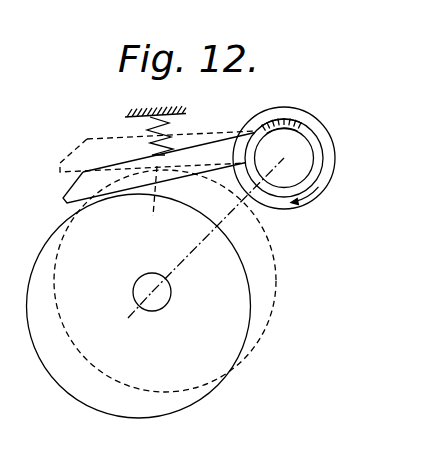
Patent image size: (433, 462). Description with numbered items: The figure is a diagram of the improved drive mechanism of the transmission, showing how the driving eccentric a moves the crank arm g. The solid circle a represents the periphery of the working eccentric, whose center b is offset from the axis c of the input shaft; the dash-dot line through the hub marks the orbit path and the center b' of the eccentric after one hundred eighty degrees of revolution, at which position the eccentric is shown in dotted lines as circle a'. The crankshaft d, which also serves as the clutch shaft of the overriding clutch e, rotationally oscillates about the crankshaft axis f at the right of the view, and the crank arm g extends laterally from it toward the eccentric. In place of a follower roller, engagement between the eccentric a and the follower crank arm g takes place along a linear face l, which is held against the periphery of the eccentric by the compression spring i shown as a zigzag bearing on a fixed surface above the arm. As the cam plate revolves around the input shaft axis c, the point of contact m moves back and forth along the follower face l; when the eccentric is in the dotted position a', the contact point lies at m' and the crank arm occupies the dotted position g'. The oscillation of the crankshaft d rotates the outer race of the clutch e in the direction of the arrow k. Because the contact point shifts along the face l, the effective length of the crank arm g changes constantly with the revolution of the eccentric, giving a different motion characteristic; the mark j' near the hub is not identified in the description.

The driving eccentric a is at (128, 306).
The eccentric after 180 degrees of revolution a' is at (187, 281).
The center of the eccentric b is at (140, 318).
The center of the eccentric in displaced position b' is at (218, 225).
The axis of the input shaft c is at (157, 296).
The crankshaft d is at (302, 173).
The overriding clutch e is at (311, 122).
The crankshaft axis f is at (284, 158).
The crank arm g is at (193, 148).
The crank arm in displaced position g' is at (144, 144).
The compression spring i is at (170, 134).
The hub contact point j' is at (119, 285).
The arrow indicating direction of rotation k is at (317, 188).
The linear face l is at (197, 174).
The point of contact m is at (118, 212).
The point of contact in displaced position m' is at (165, 196).